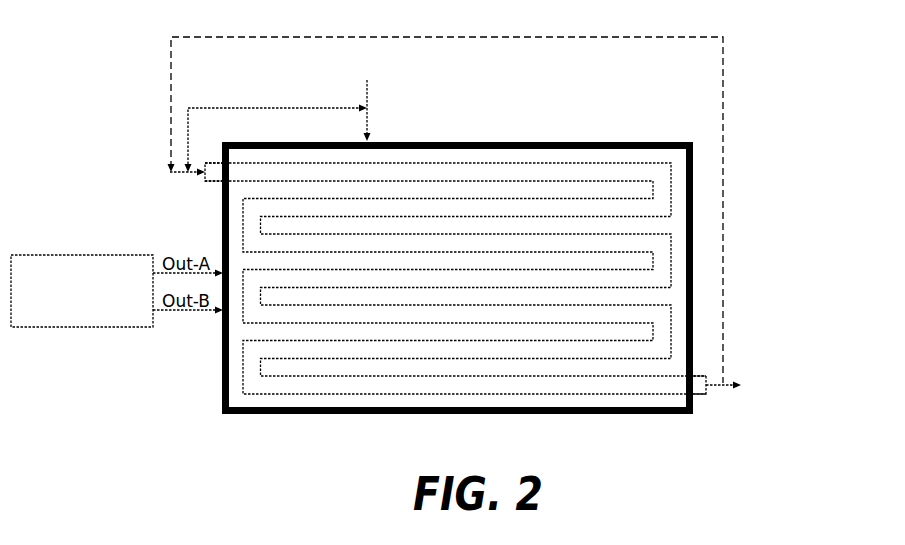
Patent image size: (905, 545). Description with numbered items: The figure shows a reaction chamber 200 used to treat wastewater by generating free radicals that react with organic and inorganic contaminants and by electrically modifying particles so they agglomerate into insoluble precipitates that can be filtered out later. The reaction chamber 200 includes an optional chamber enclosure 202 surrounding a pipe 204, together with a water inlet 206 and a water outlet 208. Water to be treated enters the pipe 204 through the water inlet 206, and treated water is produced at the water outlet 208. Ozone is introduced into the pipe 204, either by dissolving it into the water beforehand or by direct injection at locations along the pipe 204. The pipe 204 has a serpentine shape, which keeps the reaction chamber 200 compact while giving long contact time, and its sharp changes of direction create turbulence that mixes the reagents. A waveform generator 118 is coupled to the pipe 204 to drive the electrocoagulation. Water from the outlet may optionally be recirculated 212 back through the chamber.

The waveform generator 118 is at (102, 255).
The reaction chamber 200 is at (512, 103).
The chamber enclosure 202 is at (693, 252).
The pipe 204 is at (214, 163).
The water inlet 206 is at (206, 182).
The water outlet 208 is at (707, 377).
The recirculation 212 is at (724, 295).